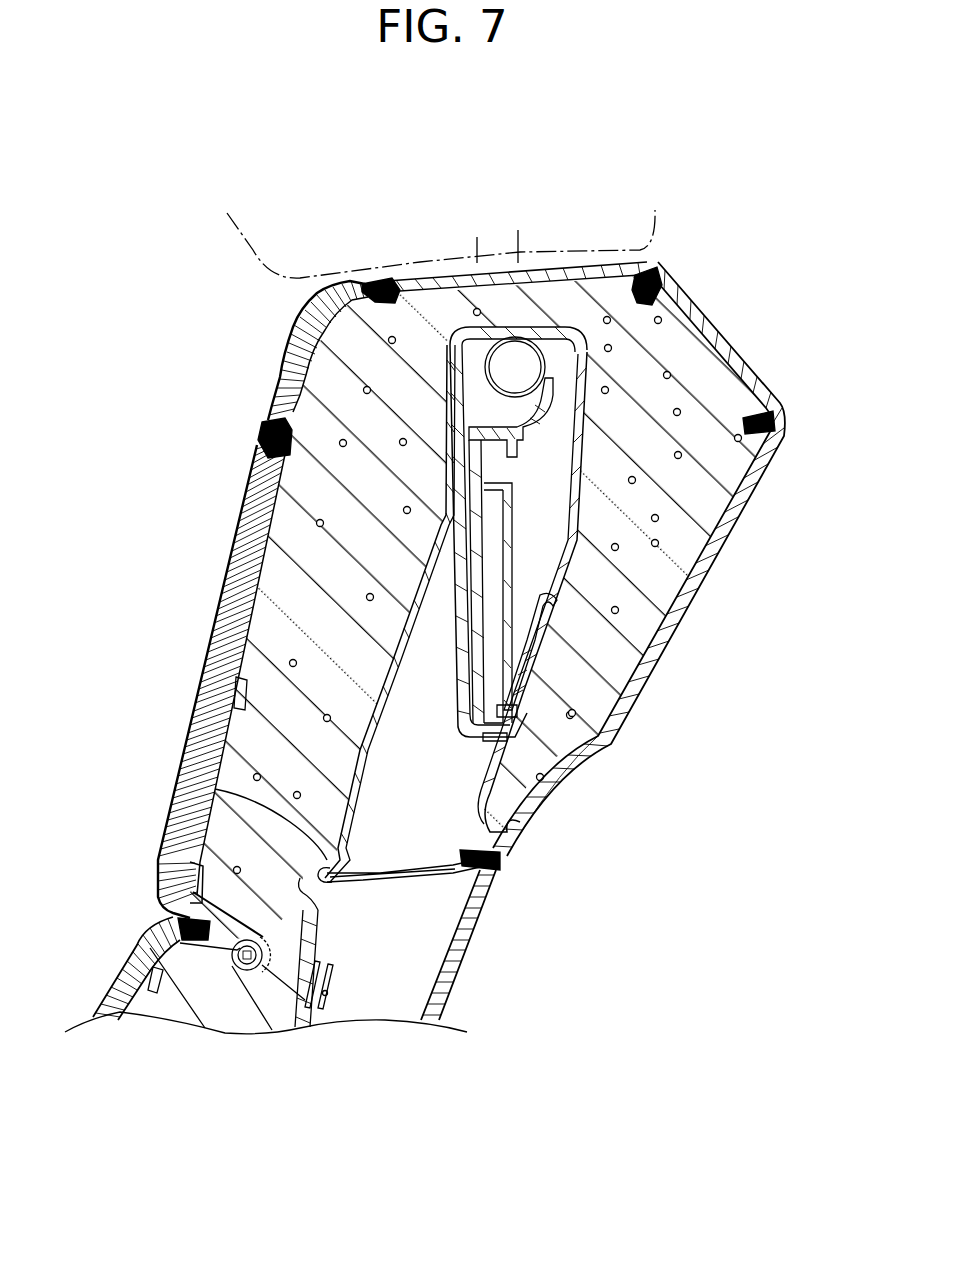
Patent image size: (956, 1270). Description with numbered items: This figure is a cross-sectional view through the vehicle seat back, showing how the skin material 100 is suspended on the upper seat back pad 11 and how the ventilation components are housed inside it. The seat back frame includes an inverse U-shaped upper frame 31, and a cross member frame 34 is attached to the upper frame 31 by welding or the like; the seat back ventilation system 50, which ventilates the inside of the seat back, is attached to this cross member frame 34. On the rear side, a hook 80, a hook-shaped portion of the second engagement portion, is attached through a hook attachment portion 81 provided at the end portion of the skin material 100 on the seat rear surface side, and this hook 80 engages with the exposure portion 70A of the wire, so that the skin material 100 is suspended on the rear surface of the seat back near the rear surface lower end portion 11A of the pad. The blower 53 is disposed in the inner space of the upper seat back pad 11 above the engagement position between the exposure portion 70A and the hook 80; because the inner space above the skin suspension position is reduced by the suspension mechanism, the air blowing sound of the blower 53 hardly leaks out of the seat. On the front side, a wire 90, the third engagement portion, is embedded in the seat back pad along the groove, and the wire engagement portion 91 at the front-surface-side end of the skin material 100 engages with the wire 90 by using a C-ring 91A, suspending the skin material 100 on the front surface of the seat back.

The upper seat back pad 11 is at (707, 370).
The rear surface lower end portion 11A is at (533, 838).
The upper frame 31 is at (549, 327).
The cross member frame 34 is at (512, 714).
The seat back ventilation system 50 is at (433, 263).
The blower 53 is at (512, 516).
The exposure portion 70A is at (183, 763).
The hook 80 is at (325, 880).
The hook attachment portion 81 is at (427, 875).
The wire 90 is at (258, 972).
The wire engagement portion 91 is at (222, 962).
The C-ring 91A is at (260, 966).
The skin material 100 is at (167, 827).